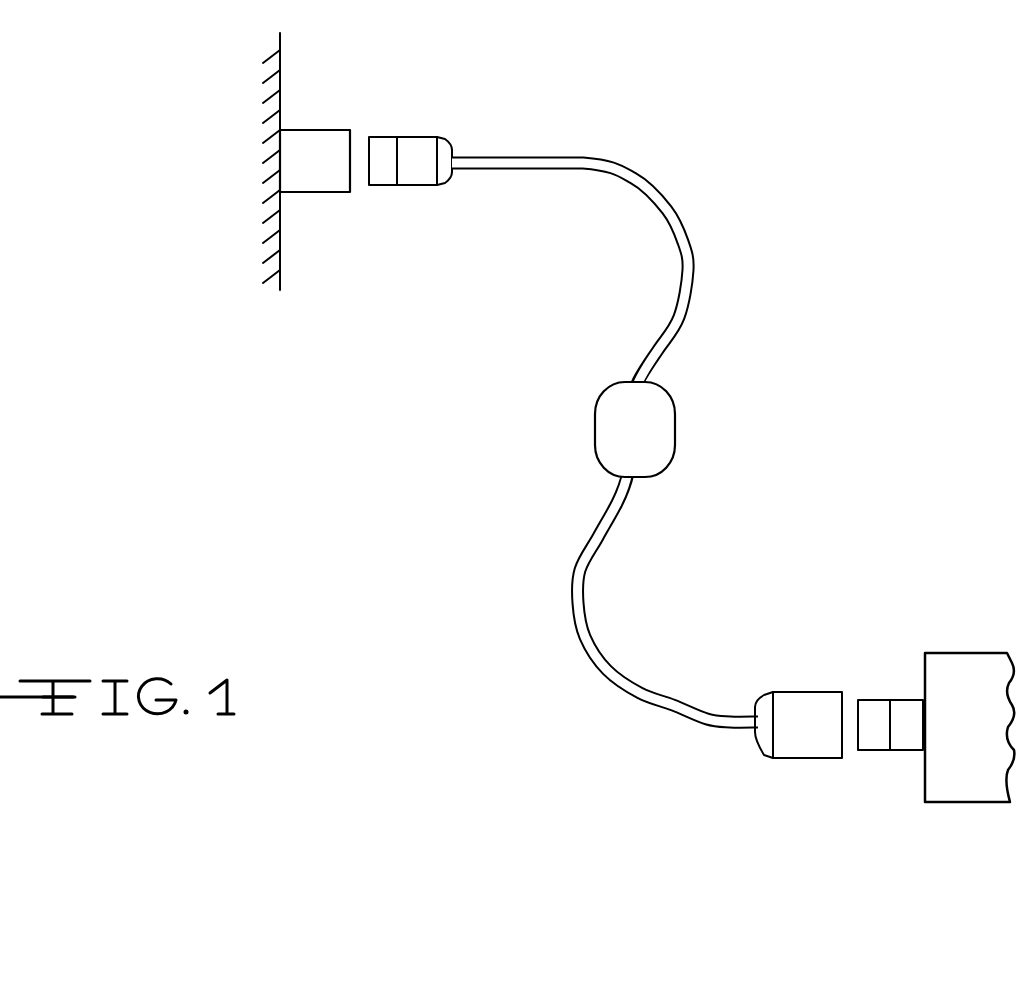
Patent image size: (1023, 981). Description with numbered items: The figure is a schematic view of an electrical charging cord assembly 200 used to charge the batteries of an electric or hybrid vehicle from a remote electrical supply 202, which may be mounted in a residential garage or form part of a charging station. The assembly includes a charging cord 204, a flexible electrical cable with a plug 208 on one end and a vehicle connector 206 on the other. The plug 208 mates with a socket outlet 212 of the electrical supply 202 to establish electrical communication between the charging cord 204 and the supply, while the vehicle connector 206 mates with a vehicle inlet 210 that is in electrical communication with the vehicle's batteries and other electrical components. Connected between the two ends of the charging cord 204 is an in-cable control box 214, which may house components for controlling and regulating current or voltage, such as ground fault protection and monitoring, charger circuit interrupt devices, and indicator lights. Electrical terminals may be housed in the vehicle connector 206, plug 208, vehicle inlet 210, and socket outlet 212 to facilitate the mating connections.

The electrical charging cord assembly 200 is at (739, 183).
The electrical supply 202 is at (278, 152).
The charging cord 204 is at (695, 296).
The vehicle connector 206 is at (815, 737).
The plug 208 is at (407, 153).
The vehicle inlet 210 is at (905, 737).
The socket outlet 212 is at (313, 145).
The in-cable control box 214 is at (648, 432).